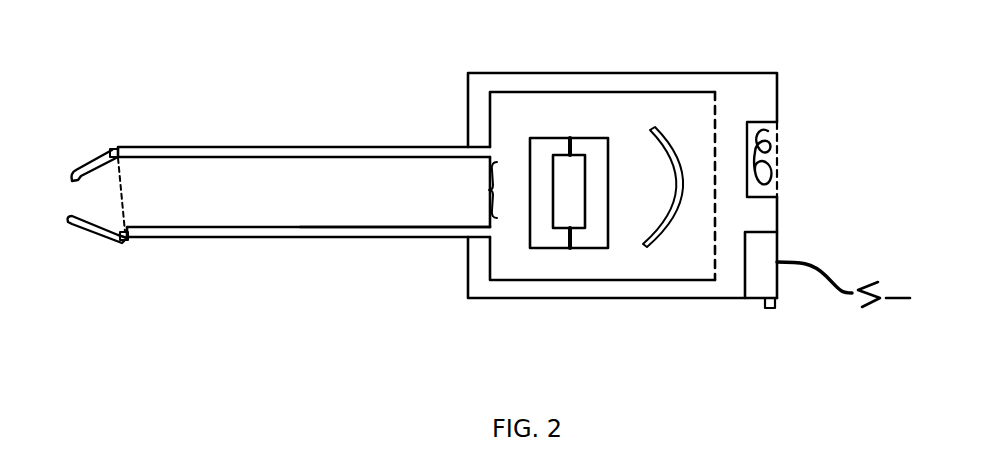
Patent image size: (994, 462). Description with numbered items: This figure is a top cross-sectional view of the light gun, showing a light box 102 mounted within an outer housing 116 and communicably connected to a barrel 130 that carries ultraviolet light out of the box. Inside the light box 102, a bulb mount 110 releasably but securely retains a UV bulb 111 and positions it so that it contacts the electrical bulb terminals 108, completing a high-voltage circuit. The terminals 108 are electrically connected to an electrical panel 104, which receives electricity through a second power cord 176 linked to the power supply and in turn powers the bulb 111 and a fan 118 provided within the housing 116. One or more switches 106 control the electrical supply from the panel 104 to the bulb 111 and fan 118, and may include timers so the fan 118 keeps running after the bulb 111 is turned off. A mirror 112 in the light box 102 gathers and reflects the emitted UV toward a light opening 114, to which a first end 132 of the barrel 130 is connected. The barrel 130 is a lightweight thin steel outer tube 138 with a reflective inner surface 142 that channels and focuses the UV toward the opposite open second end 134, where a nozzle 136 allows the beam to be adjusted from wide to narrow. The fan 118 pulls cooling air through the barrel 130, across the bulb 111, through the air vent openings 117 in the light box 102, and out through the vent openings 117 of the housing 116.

The light box 102 is at (603, 269).
The electrical panel 104 is at (753, 285).
The switch 106 is at (777, 303).
The electrical bulb terminal 108 is at (585, 175).
The bulb mount 110 is at (608, 184).
The UV bulb 111 is at (596, 175).
The mirror 112 is at (657, 131).
The light opening 114 is at (476, 190).
The outer housing 116 is at (485, 291).
The air vent opening 117 is at (711, 264).
The fan 118 is at (768, 138).
The barrel 130 is at (260, 210).
The first end 132 is at (447, 138).
The second end 134 is at (140, 249).
The nozzle 136 is at (82, 167).
The outer tube 138 is at (262, 238).
The reflective inner surface 142 is at (408, 223).
The second power cord 176 is at (832, 275).